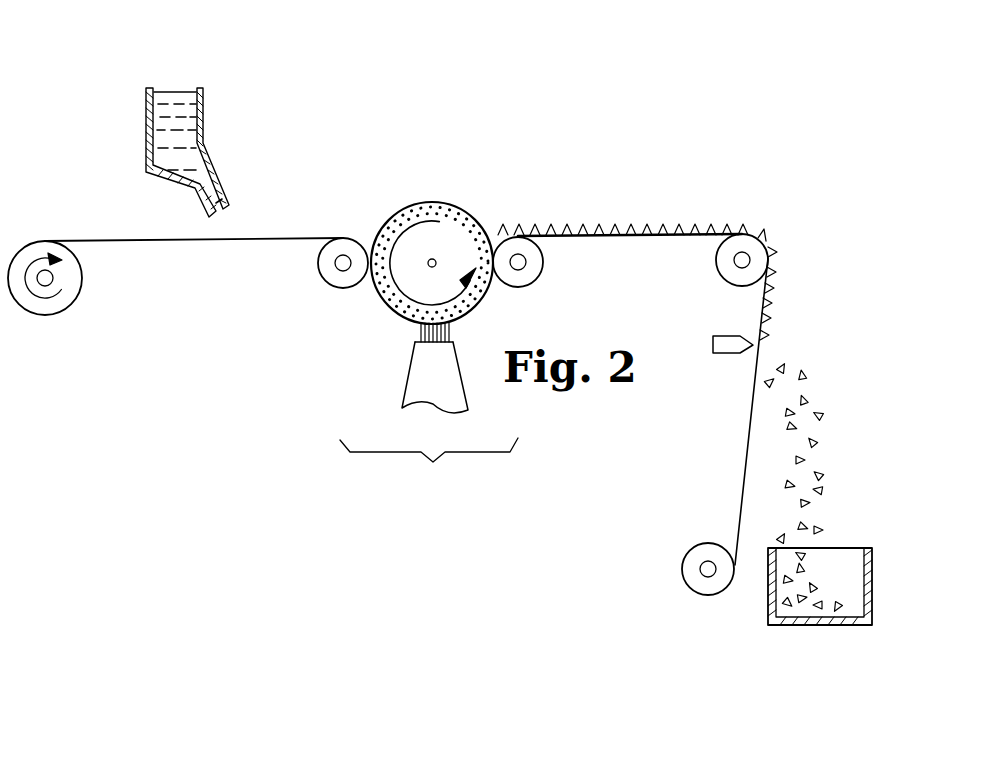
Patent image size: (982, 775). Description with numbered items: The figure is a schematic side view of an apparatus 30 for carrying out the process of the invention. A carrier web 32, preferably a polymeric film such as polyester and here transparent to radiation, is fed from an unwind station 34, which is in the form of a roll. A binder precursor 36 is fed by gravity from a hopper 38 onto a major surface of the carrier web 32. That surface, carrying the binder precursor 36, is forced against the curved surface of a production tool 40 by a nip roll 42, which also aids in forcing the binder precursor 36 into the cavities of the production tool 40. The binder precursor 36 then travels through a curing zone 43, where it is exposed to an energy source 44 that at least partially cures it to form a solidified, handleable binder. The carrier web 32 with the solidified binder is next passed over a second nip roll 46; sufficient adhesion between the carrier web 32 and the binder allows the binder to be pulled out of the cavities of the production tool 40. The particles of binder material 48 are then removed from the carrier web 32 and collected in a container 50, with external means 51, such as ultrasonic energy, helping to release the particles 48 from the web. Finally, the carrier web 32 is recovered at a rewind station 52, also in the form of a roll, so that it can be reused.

The apparatus 30 is at (470, 180).
The carrier web 32 is at (97, 239).
The unwind station 34 is at (62, 305).
The binder precursor 36 is at (172, 98).
The hopper 38 is at (204, 98).
The production tool 40 is at (419, 211).
The nip roll 42 is at (339, 279).
The curing zone 43 is at (429, 464).
The energy source 44 is at (436, 388).
The nip roll 46 is at (527, 274).
The particles of binder material 48 is at (677, 228).
The container 50 is at (827, 621).
The external means 51 is at (719, 354).
The rewind station 52 is at (692, 569).